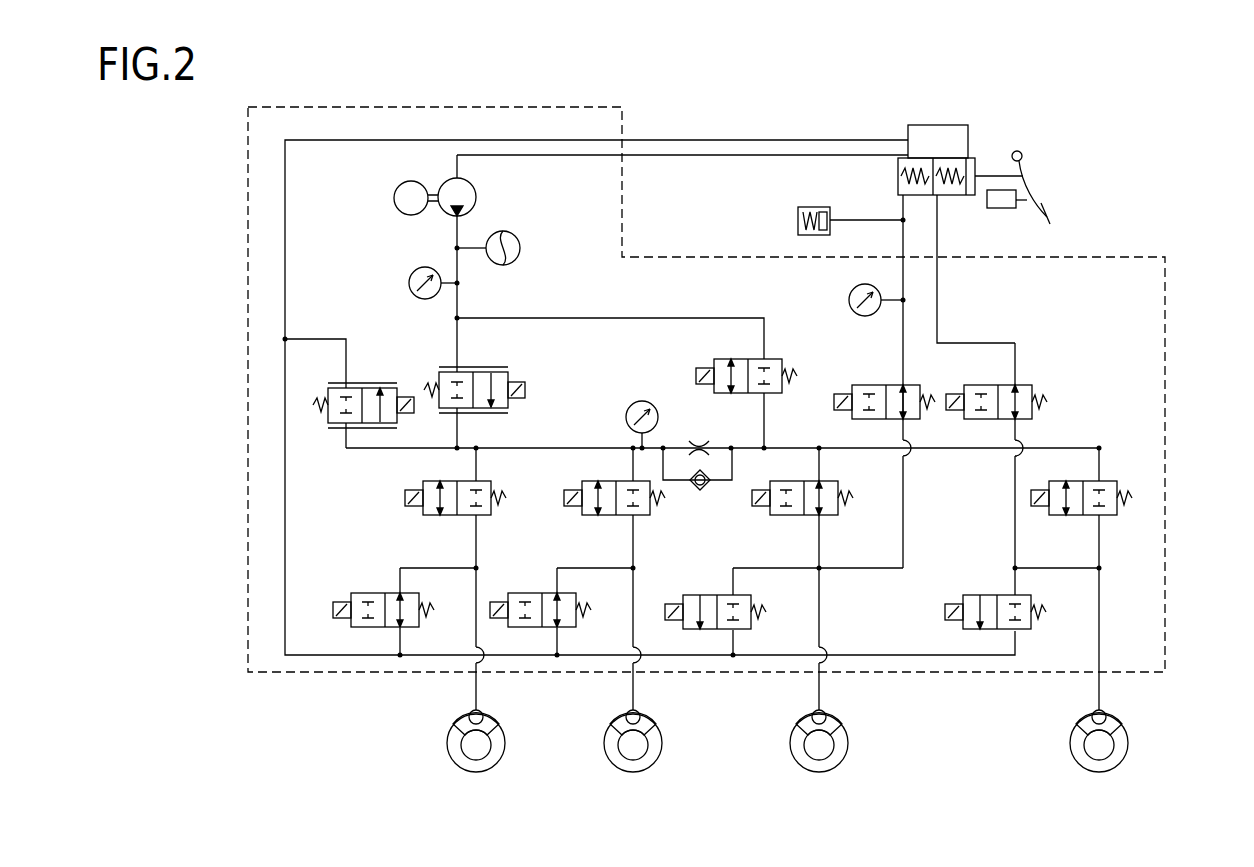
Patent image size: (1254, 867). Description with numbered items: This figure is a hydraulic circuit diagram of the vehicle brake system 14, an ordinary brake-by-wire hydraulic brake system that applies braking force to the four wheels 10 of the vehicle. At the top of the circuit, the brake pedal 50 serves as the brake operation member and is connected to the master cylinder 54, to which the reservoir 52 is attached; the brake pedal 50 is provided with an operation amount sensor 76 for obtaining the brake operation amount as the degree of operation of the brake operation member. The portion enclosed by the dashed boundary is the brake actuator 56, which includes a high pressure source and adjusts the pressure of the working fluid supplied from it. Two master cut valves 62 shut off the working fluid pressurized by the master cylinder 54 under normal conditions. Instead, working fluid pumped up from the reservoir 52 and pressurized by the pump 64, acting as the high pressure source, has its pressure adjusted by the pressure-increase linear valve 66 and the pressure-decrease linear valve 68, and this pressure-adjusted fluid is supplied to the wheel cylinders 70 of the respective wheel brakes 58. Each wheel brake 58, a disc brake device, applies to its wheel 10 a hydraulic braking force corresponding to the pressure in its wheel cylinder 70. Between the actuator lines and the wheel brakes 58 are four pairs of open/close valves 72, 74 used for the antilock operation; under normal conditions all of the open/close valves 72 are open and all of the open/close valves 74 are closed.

The wheel 10 is at (486, 768).
The vehicle brake system 14 is at (1134, 108).
The brake pedal 50 is at (1050, 215).
The reservoir 52 is at (938, 128).
The master cylinder 54 is at (977, 170).
The brake actuator 56 is at (1158, 302).
The wheel brake 58 is at (497, 718).
The master cut valve 62 is at (912, 385).
The pump 64 is at (434, 213).
The pressure-increase linear valve 66 is at (483, 367).
The pressure-decrease linear valve 68 is at (338, 432).
The wheel cylinder 70 is at (480, 710).
The open/close valve 72 is at (488, 516).
The open/close valve 74 is at (356, 592).
The operation amount sensor 76 is at (1000, 208).